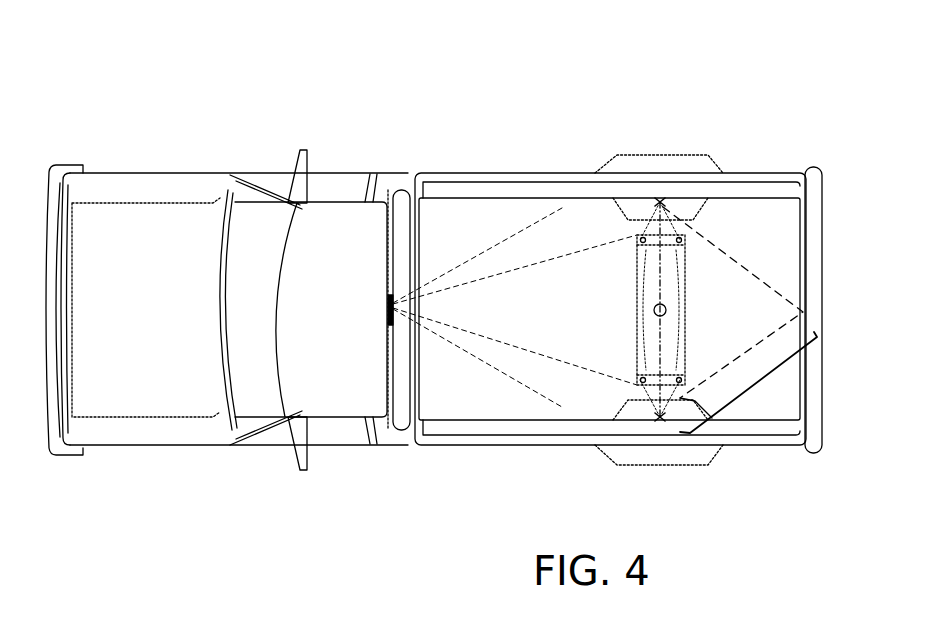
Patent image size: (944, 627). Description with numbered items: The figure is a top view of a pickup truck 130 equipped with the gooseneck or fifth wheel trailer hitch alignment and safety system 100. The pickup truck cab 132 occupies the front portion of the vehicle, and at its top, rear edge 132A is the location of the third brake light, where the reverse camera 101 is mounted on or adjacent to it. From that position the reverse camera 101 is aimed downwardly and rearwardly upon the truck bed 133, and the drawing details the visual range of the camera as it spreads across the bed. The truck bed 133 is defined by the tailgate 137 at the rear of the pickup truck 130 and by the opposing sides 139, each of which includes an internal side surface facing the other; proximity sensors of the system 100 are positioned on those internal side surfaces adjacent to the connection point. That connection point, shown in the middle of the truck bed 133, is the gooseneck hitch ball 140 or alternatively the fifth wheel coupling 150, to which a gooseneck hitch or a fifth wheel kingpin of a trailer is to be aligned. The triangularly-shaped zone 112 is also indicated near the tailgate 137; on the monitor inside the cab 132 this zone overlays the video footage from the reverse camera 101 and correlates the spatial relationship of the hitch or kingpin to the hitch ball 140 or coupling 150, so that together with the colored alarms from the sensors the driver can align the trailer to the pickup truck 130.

The gooseneck or fifth wheel trailer hitch alignment and safety system 100 is at (451, 125).
The reverse camera 101 is at (386, 336).
The triangularly-shaped zone 112 is at (752, 390).
The pickup truck 130 is at (150, 187).
The pickup truck cab 132 is at (405, 140).
The top, rear edge 132A is at (389, 448).
The truck bed 133 is at (747, 217).
The tailgate 137 is at (803, 312).
The opposing sides 139 is at (545, 178).
The gooseneck hitch ball 140 is at (633, 273).
The fifth wheel coupling 150 is at (660, 309).